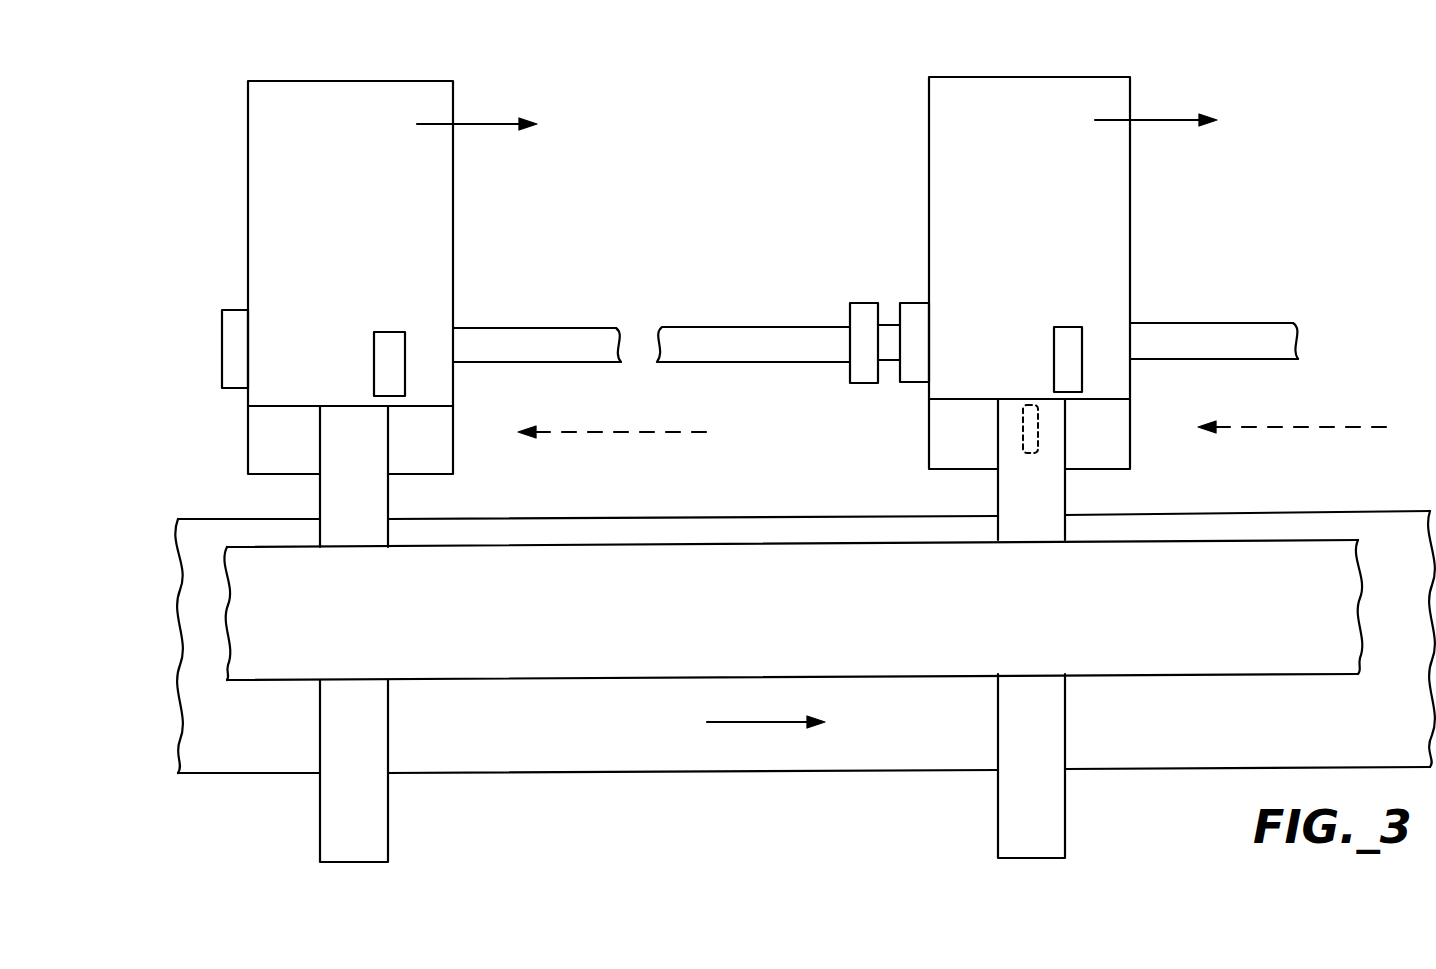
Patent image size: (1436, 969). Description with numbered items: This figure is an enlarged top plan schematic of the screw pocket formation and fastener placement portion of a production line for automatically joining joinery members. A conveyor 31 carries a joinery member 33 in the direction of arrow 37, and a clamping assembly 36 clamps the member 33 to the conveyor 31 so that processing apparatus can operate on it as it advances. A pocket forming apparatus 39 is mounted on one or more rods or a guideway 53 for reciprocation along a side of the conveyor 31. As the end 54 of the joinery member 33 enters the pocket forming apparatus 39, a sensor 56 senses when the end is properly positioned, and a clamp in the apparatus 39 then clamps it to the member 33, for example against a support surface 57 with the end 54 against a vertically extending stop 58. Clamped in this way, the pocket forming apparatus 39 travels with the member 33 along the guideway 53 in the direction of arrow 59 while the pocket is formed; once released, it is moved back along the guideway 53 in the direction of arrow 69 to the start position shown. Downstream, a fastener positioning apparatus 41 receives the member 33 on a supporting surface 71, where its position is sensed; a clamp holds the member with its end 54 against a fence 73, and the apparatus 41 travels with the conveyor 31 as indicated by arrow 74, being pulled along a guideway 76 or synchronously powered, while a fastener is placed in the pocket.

The conveyor 31 is at (842, 772).
The joinery member 33 is at (375, 495).
The clamping assembly 36 is at (618, 681).
The direction arrow 37 is at (742, 722).
The pocket forming apparatus 39 is at (458, 215).
The fastener positioning apparatus 41 is at (922, 187).
The guideway 53 is at (690, 327).
The end of joinery member 54 is at (273, 406).
The sensor 56 is at (388, 332).
The support surface 57 is at (258, 433).
The stop 58 is at (430, 407).
The direction arrow 59 is at (483, 122).
The return direction arrow 69 is at (681, 432).
The supporting surface 71 is at (1118, 423).
The fence 73 is at (955, 399).
The direction arrow 74 is at (1162, 120).
The guideway 76 is at (1265, 323).